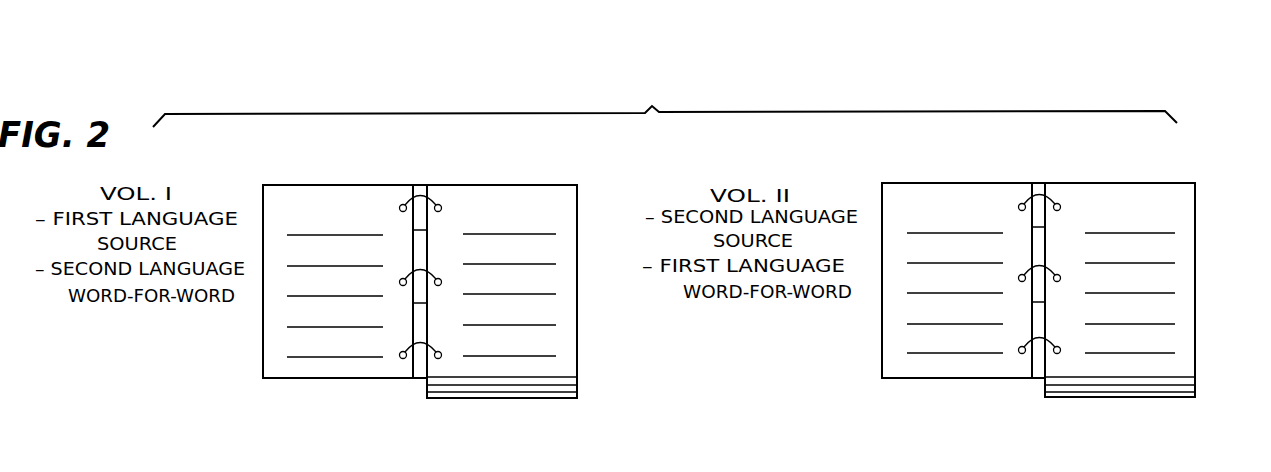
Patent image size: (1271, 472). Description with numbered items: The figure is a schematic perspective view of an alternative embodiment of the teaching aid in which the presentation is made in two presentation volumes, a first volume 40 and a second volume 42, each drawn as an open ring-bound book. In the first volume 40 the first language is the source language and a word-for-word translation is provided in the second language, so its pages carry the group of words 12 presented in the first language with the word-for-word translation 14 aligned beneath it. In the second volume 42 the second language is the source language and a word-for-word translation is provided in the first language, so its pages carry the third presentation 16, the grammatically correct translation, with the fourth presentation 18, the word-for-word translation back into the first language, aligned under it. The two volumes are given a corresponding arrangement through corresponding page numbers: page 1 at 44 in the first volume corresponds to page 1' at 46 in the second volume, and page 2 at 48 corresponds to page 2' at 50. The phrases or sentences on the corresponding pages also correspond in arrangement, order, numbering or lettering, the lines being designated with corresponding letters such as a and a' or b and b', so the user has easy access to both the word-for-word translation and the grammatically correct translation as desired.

The first volume 40 is at (427, 184).
The second volume 42 is at (1045, 181).
The page 1 of first volume 44 is at (332, 201).
The page 2 of first volume 48 is at (510, 200).
The page 1' of second volume 46 is at (950, 198).
The page 2' of second volume 50 is at (1128, 197).
The group of words 12 is at (355, 232).
The word-for-word translation 14 is at (314, 265).
The third presentation 16 is at (982, 231).
The fourth presentation 18 is at (938, 263).
The page number 1 is at (338, 203).
The page number 2 is at (503, 204).
The page number 1' is at (962, 200).
The page number 2' is at (1122, 201).